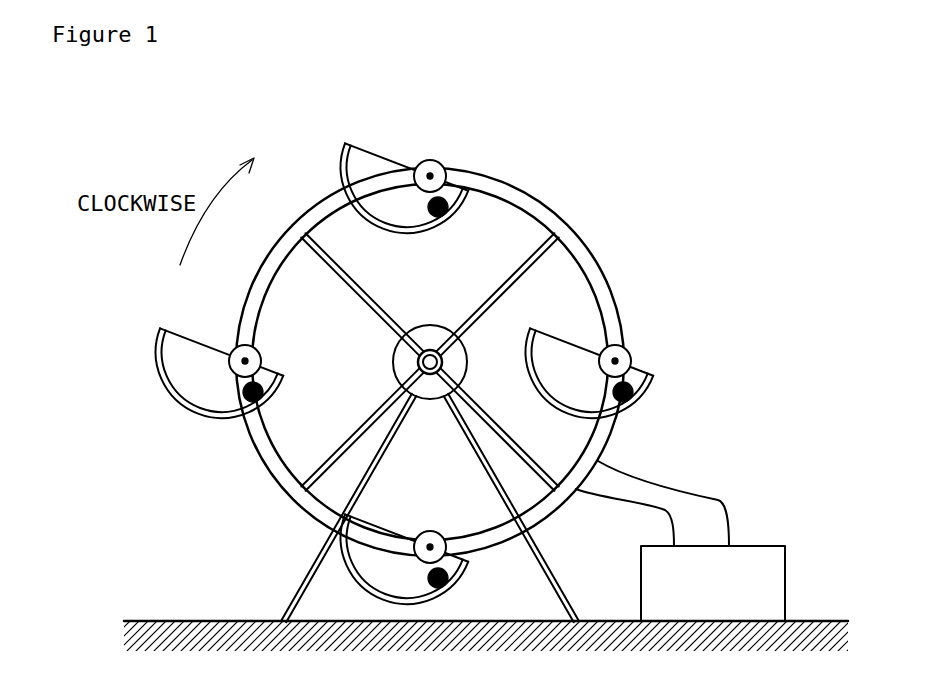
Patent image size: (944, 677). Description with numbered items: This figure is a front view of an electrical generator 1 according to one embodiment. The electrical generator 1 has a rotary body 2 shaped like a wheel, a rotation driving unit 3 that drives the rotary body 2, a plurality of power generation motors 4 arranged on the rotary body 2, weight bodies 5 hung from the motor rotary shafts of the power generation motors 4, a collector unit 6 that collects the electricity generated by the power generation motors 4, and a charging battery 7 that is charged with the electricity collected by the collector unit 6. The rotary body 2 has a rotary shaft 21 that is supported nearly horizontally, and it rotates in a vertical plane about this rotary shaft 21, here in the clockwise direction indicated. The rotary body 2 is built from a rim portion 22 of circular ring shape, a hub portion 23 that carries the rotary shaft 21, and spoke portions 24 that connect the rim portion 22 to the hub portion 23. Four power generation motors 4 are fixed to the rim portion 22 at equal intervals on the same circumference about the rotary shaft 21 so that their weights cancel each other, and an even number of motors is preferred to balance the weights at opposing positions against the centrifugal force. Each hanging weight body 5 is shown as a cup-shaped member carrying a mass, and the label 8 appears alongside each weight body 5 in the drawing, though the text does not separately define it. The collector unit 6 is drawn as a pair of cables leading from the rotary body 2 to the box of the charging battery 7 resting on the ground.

The electrical generator 1 is at (128, 152).
The rotary body 2 is at (593, 219).
The rotation driving unit 3 is at (468, 358).
The power generation motor 4 is at (431, 160).
The weight body 5 is at (343, 169).
The collector unit 6 is at (648, 470).
The charging battery 7 is at (704, 601).
The weight 8 is at (427, 373).
The rotary shaft 21 is at (431, 348).
The rim portion 22 is at (537, 197).
The hub portion 23 is at (417, 360).
The spoke portion 24 is at (373, 298).